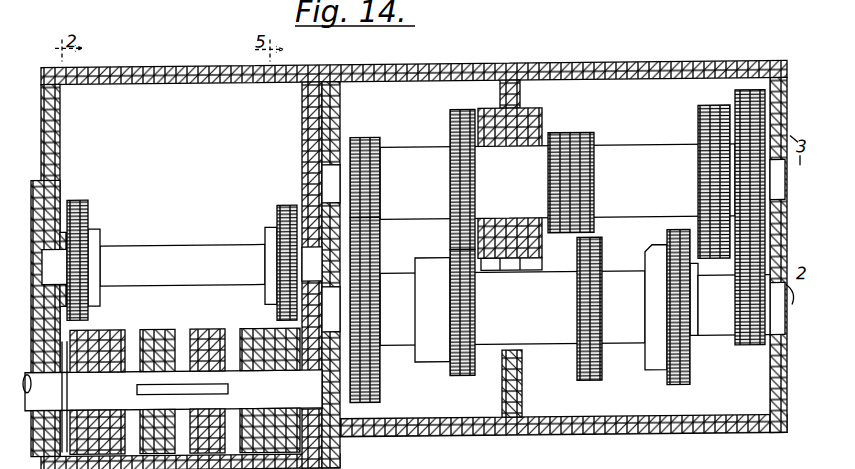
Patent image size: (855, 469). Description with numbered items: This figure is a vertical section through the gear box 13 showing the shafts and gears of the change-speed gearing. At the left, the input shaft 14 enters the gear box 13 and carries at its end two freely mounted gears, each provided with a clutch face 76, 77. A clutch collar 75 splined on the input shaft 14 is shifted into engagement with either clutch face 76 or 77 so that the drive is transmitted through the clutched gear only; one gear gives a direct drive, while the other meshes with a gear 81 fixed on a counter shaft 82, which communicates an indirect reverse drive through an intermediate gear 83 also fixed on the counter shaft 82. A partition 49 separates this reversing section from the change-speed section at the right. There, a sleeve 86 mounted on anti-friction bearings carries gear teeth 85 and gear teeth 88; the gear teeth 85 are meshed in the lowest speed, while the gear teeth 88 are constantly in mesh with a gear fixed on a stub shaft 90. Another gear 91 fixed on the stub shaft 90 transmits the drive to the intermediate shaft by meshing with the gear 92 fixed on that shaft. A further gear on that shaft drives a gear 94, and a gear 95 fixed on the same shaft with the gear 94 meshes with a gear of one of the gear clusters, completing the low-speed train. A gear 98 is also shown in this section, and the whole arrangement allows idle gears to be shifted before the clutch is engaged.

The gear box 13 is at (576, 72).
The input shaft 14 is at (172, 390).
The partition wall of housing 49 is at (302, 106).
The clutch collar 75 is at (170, 326).
The clutch face 76 is at (116, 324).
The clutch face 77 is at (236, 327).
The gear 81 is at (86, 205).
The counter shaft 82 is at (122, 262).
The intermediate gear 83 is at (284, 208).
The gear teeth 85 is at (684, 392).
The sleeve 86 is at (624, 350).
The gear teeth 88 is at (463, 382).
The stub shaft 90 is at (481, 180).
The gear 91 is at (360, 141).
The gear 92 is at (381, 398).
The gear 94 is at (740, 102).
The gear 95 is at (583, 139).
The gear 98 is at (589, 388).